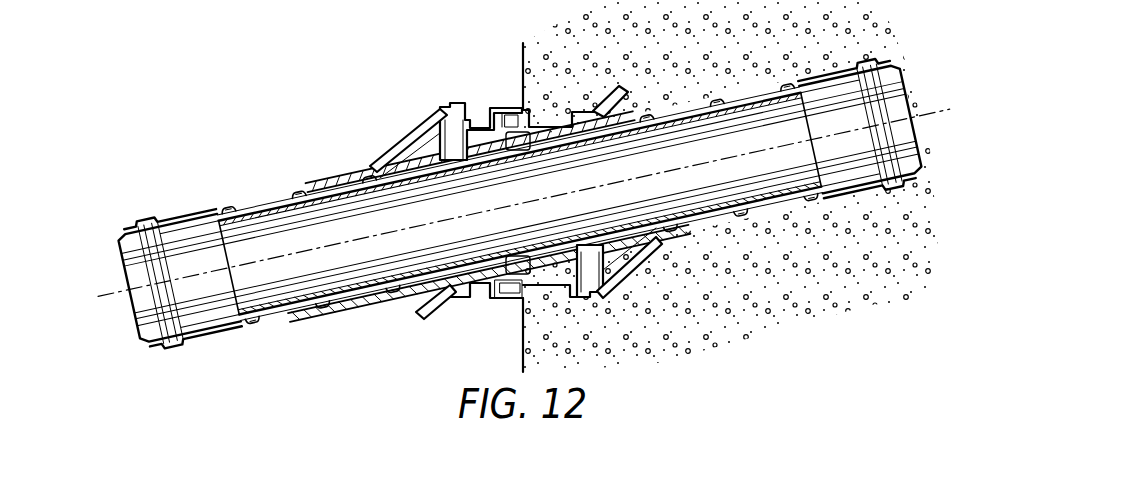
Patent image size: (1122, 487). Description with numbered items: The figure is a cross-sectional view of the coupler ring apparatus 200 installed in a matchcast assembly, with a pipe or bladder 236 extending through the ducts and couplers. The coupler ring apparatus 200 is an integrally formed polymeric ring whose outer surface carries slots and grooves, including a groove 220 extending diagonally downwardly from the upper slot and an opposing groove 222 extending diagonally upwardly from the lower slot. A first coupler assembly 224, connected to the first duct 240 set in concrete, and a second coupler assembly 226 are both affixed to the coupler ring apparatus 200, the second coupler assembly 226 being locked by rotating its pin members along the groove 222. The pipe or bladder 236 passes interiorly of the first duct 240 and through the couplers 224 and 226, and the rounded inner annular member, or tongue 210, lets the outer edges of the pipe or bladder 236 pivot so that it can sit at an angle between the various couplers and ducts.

The coupler ring apparatus 200 is at (528, 135).
The tongue 210 is at (515, 160).
The groove 220 is at (600, 69).
The groove 222 is at (840, 72).
The first coupler assembly 224 is at (622, 92).
The second coupler assembly 226 is at (432, 117).
The pipe or bladder 236 is at (282, 217).
The first duct 240 is at (205, 214).